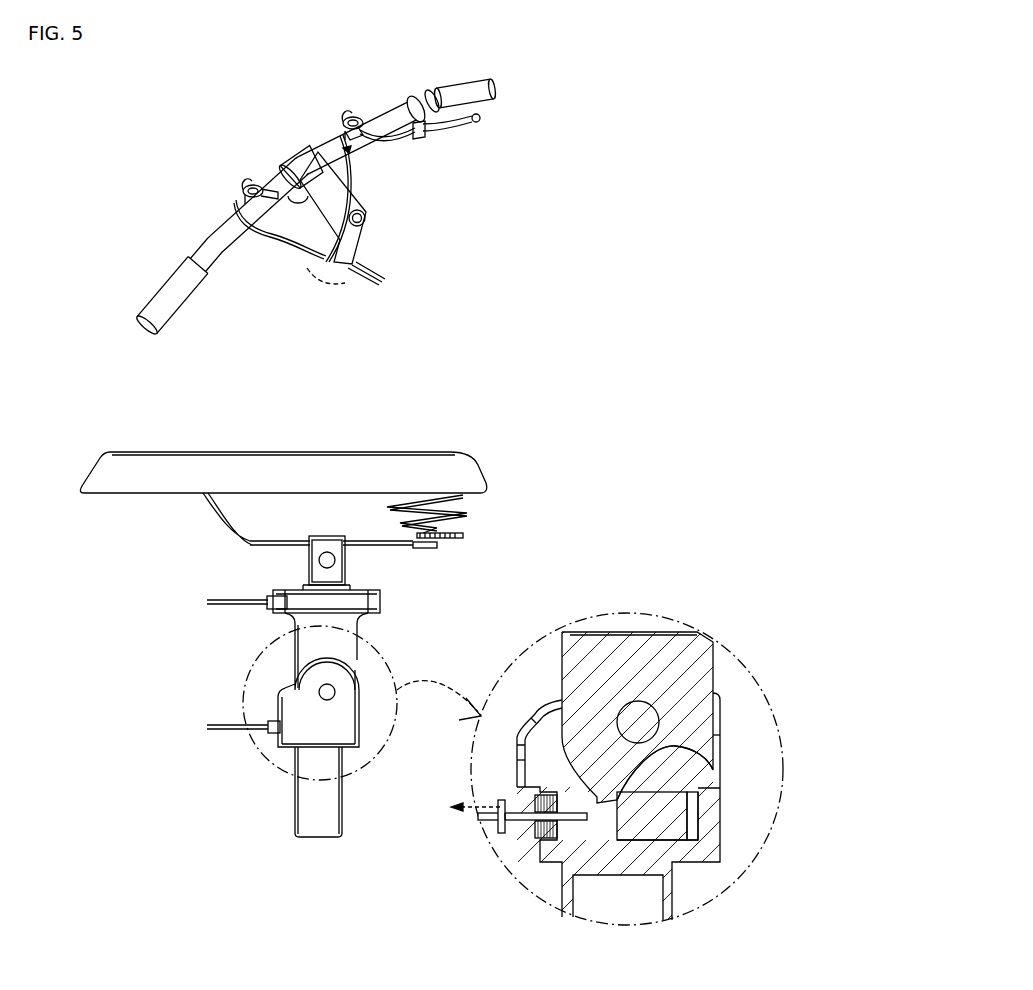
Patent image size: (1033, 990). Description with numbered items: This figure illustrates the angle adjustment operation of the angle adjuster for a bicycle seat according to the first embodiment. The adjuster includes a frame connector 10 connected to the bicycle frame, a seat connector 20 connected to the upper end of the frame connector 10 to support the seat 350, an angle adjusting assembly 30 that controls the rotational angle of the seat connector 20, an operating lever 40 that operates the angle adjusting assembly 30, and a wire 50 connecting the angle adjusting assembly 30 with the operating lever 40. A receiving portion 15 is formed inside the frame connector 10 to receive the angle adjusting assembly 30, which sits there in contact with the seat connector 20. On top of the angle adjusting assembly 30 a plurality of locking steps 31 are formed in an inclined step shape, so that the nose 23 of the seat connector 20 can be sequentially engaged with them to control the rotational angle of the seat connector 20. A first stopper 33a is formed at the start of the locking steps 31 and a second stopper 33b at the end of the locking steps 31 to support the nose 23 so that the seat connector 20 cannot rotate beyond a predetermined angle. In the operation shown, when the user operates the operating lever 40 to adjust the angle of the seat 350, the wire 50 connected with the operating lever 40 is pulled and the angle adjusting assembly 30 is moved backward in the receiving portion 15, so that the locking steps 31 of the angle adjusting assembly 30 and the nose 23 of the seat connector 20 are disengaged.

The frame connector 10 is at (298, 818).
The receiving portion 15 is at (665, 793).
The seat connector 20 is at (298, 655).
The nose 23 is at (606, 800).
The angle adjusting assembly 30 is at (700, 822).
The locking steps 31 is at (623, 800).
The first stopper 33a is at (525, 773).
The second stopper 33b is at (700, 745).
The operating lever 40 is at (350, 117).
The wire 50 is at (346, 180).
The seat 350 is at (432, 460).